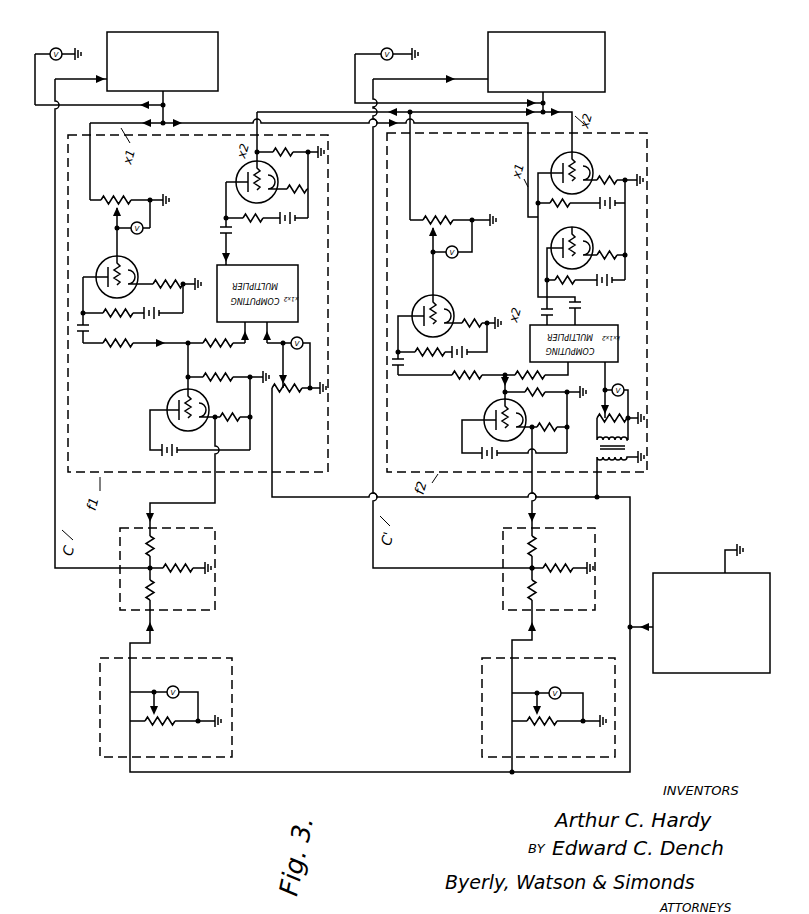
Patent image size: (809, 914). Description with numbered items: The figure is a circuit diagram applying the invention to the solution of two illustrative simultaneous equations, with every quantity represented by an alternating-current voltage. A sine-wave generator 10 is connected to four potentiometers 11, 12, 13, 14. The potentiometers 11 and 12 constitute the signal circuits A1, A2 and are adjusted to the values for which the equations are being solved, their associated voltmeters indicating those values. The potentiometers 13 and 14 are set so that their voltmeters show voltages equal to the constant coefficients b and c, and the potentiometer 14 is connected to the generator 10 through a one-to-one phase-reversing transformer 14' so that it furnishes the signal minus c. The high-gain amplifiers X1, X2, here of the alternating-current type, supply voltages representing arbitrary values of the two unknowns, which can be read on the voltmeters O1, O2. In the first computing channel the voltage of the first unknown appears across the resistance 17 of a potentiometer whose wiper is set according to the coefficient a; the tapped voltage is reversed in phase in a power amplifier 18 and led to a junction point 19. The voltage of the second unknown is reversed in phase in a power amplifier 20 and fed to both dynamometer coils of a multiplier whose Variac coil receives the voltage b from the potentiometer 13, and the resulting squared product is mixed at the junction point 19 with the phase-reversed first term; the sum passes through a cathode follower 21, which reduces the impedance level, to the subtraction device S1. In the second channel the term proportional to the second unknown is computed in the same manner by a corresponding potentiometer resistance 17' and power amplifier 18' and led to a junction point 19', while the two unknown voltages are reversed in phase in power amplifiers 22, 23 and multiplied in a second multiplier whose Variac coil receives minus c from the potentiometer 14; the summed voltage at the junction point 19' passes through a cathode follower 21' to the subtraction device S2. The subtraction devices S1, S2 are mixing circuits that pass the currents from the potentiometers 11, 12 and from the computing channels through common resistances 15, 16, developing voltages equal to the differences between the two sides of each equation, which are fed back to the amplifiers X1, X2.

The sine-wave generator 10 is at (711, 632).
The potentiometer 11 is at (147, 709).
The potentiometer 12 is at (531, 710).
The potentiometer 13 is at (294, 376).
The potentiometer 14 is at (606, 401).
The phase-reversing transformer 14' is at (606, 469).
The common resistance 15 is at (154, 570).
The common resistance 16 is at (535, 570).
The resistance of potentiometer 17 is at (129, 215).
The potentiometer 17' is at (440, 232).
The power amplifier 18 is at (135, 297).
The amplifier tube 18' is at (446, 335).
The junction point 19 is at (176, 355).
The junction point 19' is at (492, 378).
The power amplifier 20 is at (259, 205).
The cathode follower 21 is at (187, 416).
The cathode follower 21' is at (500, 426).
The power amplifier 22 is at (584, 276).
The power amplifier 23 is at (590, 238).
The voltmeter O1 is at (53, 49).
The voltmeter O2 is at (386, 48).
The high-gain amplifier X1 is at (220, 47).
The high-gain amplifier X2 is at (607, 88).
The subtraction device S1 is at (112, 584).
The subtraction device S2 is at (495, 590).
The signal circuit A1 is at (98, 708).
The signal circuit A2 is at (482, 706).